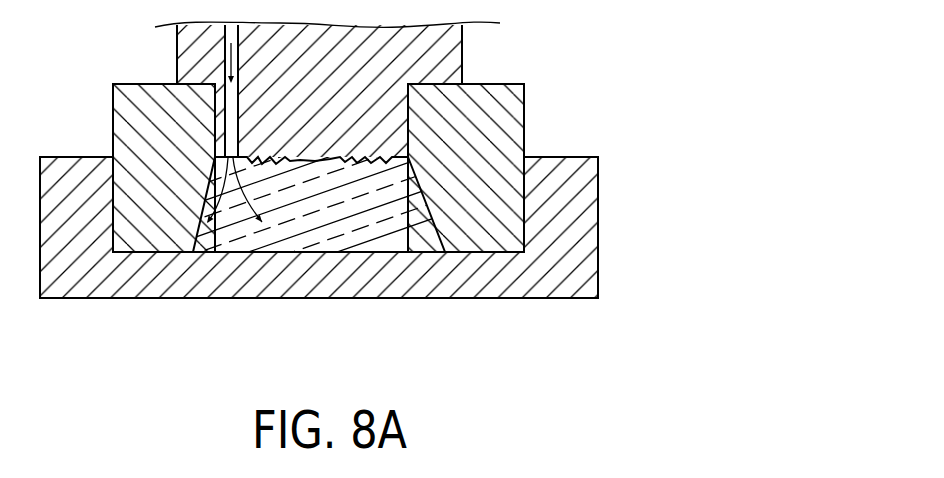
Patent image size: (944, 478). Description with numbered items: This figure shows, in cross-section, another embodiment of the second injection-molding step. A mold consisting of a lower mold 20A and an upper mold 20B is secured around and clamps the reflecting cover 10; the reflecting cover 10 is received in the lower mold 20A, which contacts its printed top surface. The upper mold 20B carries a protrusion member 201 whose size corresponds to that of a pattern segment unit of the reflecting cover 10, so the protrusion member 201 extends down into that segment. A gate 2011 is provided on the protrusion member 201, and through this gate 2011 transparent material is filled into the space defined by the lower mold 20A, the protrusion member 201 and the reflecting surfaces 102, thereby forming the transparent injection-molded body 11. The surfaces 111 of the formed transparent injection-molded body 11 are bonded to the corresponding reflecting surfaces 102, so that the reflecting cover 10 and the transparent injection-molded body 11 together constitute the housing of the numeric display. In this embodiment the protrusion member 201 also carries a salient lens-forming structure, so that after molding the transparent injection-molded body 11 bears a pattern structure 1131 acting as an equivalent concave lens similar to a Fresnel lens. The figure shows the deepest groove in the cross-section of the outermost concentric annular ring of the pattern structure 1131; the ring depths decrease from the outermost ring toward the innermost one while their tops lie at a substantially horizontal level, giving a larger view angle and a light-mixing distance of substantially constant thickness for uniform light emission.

The reflecting cover 10 is at (355, 222).
The lower mold 20A is at (560, 196).
The surfaces of the transparent injection-molded body 111 is at (409, 197).
The reflecting surfaces 102 is at (425, 238).
The upper mold 20B is at (412, 191).
The protrusion member 201 is at (380, 128).
The gate 2011 is at (229, 160).
The transparent injection-molded body 11 is at (354, 242).
The pattern structure 1131 is at (289, 170).